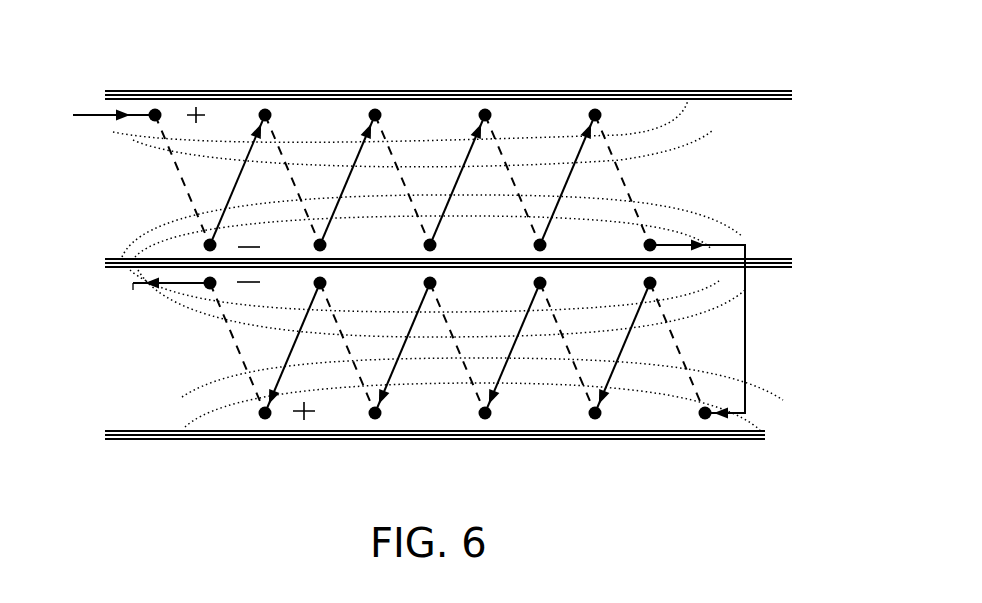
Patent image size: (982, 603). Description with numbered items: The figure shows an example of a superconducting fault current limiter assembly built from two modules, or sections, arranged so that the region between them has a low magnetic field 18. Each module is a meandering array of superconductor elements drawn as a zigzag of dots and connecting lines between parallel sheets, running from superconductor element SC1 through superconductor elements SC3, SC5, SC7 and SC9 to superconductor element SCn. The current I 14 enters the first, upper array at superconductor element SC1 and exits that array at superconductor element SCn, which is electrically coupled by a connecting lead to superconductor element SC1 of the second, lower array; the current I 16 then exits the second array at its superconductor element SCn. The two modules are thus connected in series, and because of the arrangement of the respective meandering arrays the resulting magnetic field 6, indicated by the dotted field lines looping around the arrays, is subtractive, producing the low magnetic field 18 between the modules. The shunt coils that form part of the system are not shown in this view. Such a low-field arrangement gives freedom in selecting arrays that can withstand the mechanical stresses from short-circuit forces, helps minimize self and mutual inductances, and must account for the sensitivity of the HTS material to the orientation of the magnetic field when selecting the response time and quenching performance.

The magnetic field 6 is at (703, 143).
The current I entering 14 is at (88, 110).
The current I exiting 16 is at (137, 285).
The low magnetic field region 18 is at (313, 89).
The superconductor element sc1 SC1 is at (687, 453).
The superconductor element sc3 SC3 is at (262, 108).
The superconductor element sc5 SC5 is at (372, 108).
The superconductor element sc7 SC7 is at (482, 108).
The superconductor element sc9 SC9 is at (247, 453).
The superconductor element scn SCn is at (657, 238).